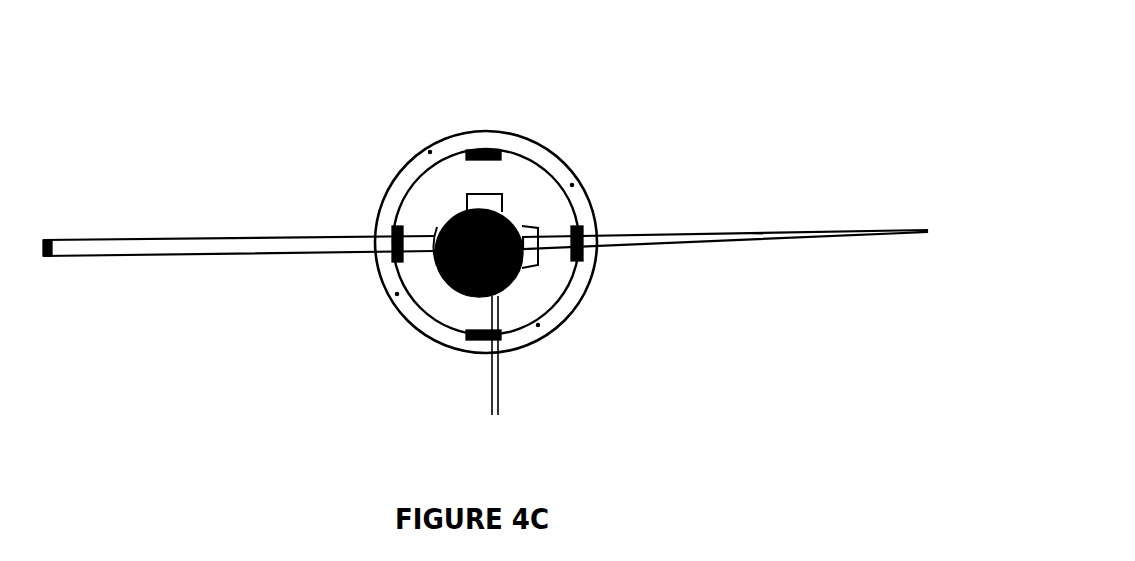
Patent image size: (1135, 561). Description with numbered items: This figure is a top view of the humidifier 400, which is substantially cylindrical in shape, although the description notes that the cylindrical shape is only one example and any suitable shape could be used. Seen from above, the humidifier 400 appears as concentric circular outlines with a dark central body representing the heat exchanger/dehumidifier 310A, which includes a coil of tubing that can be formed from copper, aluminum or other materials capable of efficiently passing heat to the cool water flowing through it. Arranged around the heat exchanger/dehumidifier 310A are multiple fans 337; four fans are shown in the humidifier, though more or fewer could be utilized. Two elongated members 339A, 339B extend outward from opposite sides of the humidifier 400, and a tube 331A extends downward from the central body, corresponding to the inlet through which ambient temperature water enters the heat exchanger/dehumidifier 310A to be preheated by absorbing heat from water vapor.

The humidifier 400 is at (263, 80).
The heat exchanger/dehumidifier 310A is at (458, 211).
The fans 337 is at (582, 252).
The rotor blade 339A is at (762, 233).
The rotor blade 339B is at (209, 248).
The inlet 331A is at (492, 392).